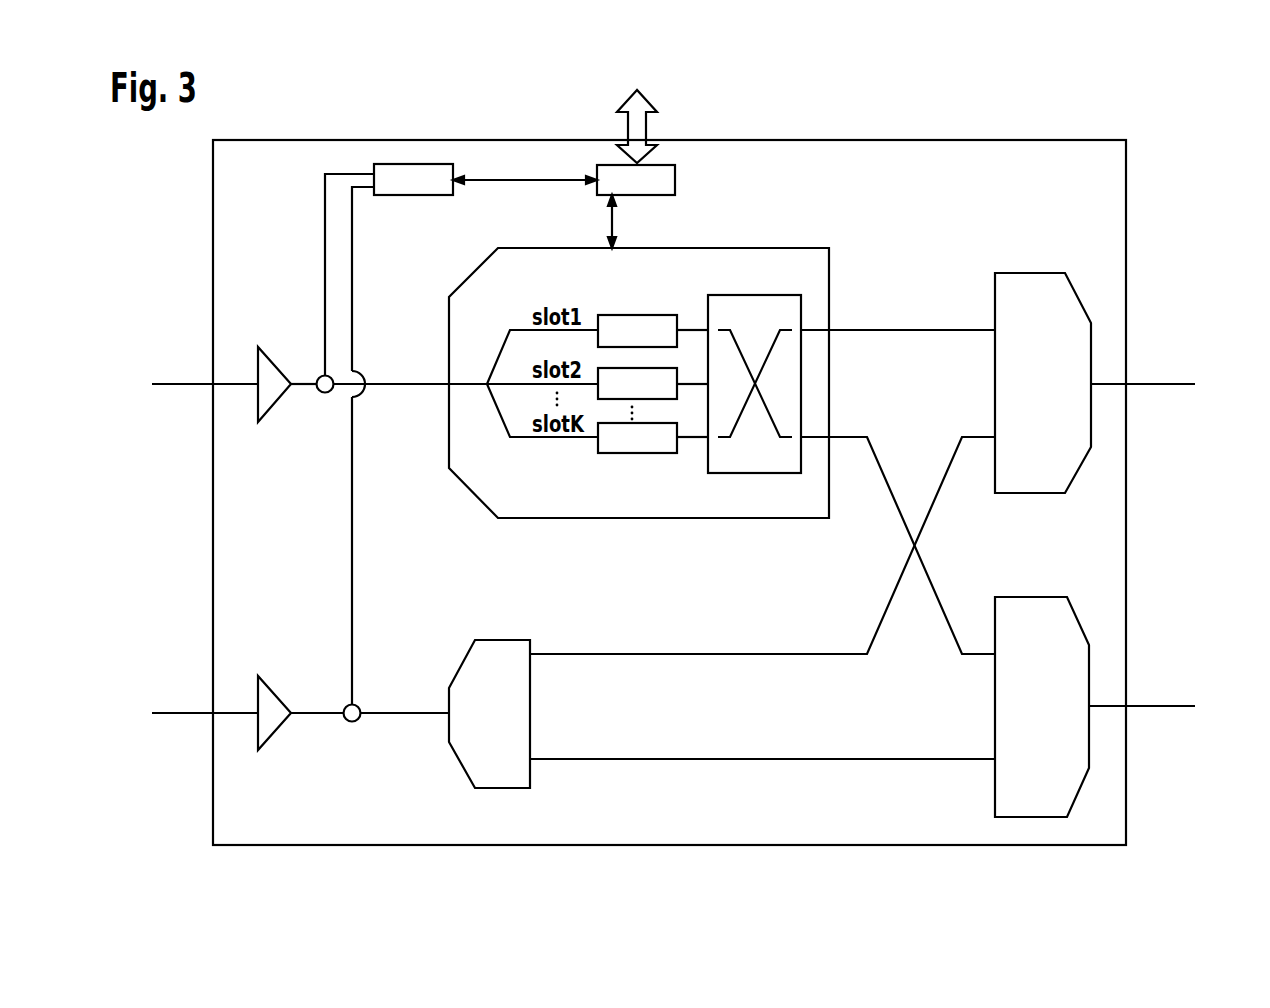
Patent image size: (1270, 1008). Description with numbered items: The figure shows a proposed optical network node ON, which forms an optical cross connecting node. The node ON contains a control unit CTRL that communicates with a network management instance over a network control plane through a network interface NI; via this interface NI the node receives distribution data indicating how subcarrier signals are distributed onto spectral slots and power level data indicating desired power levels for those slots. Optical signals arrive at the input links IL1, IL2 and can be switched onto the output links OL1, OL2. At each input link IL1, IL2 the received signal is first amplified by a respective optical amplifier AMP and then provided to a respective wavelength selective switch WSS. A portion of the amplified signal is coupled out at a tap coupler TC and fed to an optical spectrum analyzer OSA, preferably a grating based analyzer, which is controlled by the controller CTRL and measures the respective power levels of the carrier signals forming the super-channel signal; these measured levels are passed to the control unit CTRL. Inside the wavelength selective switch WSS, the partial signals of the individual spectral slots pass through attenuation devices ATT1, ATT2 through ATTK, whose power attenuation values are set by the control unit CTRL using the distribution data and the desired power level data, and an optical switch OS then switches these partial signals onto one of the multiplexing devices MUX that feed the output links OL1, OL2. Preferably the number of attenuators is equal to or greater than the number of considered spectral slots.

The optical network node ON is at (1150, 160).
The network interface NI is at (647, 118).
The optical spectrum analyzer OSA is at (413, 179).
The control unit CTRL is at (636, 180).
The input link IL1 is at (170, 384).
The input link IL2 is at (170, 713).
The output link OL1 is at (1170, 384).
The output link OL2 is at (1173, 706).
The optical amplifier AMP is at (276, 400).
The tap coupler TC is at (328, 394).
The wavelength selective switch WSS is at (460, 486).
The optical switch OS is at (777, 295).
The attenuation device ATT1 is at (637, 331).
The attenuation device ATT2 is at (637, 383).
The attenuation device ATTK is at (637, 438).
The multiplexing device MUX is at (1043, 545).